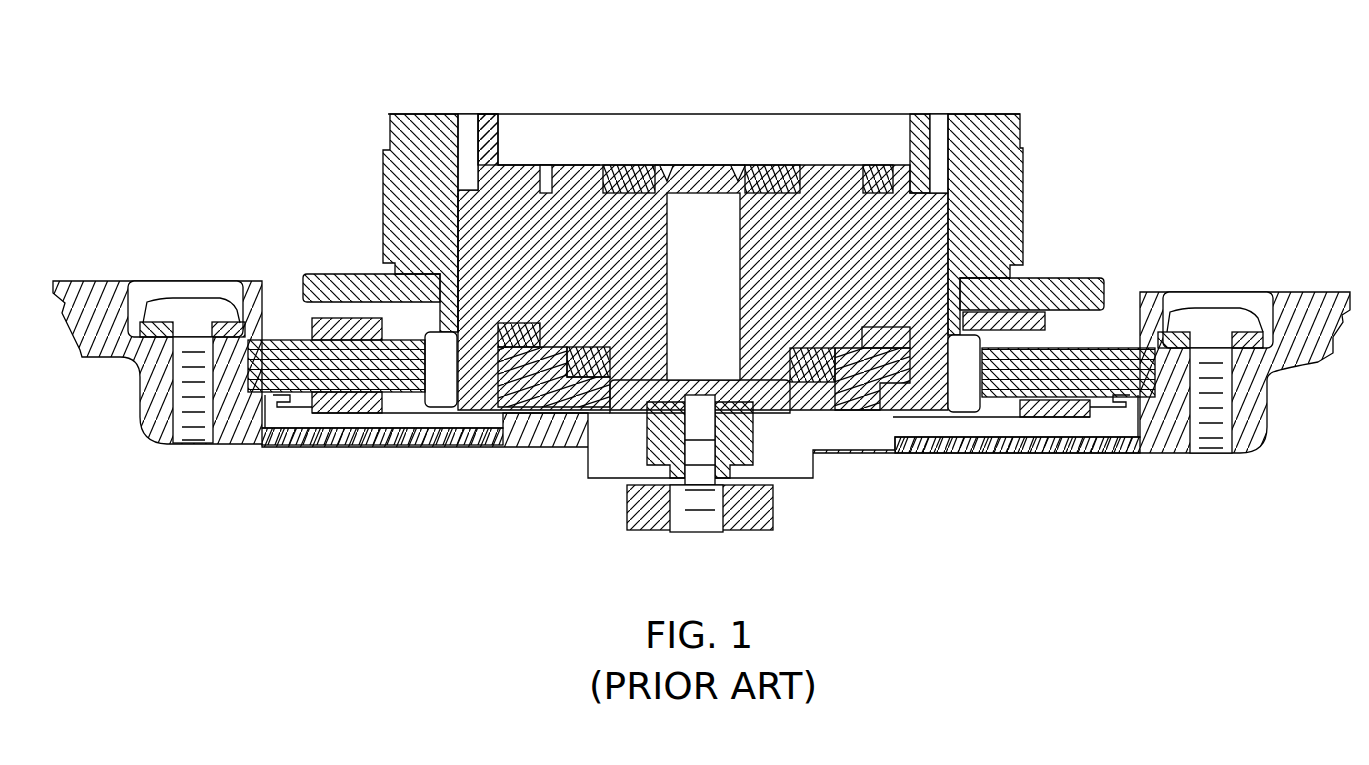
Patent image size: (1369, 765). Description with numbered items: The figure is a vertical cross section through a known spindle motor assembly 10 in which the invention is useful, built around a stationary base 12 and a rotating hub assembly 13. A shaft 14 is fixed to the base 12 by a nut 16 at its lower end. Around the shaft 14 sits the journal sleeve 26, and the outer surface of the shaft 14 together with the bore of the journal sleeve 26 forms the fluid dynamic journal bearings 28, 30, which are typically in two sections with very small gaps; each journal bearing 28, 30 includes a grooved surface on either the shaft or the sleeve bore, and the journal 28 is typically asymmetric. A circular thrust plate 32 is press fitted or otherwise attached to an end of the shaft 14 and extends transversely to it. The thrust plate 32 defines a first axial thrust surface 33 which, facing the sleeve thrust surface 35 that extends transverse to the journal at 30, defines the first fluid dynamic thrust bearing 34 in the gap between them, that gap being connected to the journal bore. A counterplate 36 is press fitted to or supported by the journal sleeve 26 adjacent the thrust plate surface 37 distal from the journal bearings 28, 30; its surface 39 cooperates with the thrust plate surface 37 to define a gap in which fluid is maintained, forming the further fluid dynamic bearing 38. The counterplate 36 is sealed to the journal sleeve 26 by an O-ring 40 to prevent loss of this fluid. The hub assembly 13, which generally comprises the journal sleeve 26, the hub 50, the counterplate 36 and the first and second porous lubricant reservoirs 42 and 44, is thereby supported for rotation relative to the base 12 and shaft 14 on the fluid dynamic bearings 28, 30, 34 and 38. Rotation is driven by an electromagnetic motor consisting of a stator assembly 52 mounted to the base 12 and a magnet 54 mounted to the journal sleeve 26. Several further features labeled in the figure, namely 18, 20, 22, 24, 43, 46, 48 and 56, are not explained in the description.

The spindle motor 10 is at (701, 317).
The base 12 is at (952, 448).
The hub assembly 13 is at (1172, 157).
The shaft 14 is at (701, 237).
The nut 16 is at (750, 530).
The clamp ring 18 is at (662, 165).
The bore chamfer 20 is at (687, 165).
The clamp screw 22 is at (722, 165).
The hub flange 24 is at (955, 248).
The journal sleeve 26 is at (663, 235).
The fluid dynamic journal bearing 28 is at (500, 280).
The fluid dynamic journal bearing 30 is at (497, 240).
The thrust plate 32 is at (635, 165).
The first axial thrust surface 33 is at (620, 165).
The first fluid dynamic thrust bearing 34 is at (550, 165).
The sleeve thrust surface 35 is at (672, 193).
The counterplate 36 is at (506, 115).
The thrust plate surface 37 is at (632, 165).
The fluid dynamic bearing 38 is at (647, 165).
The counterplate surface 39 is at (800, 165).
The O-ring 40 is at (888, 165).
The first porous lubricant reservoir 42 is at (862, 165).
The step 43 is at (803, 165).
The second porous lubricant reservoir 44 is at (830, 400).
The stator core 46 is at (560, 398).
The magnet 48 is at (533, 388).
The hub 50 is at (1023, 165).
The stator assembly 52 is at (352, 410).
The magnet 54 is at (442, 410).
The bearing sleeve 56 is at (740, 400).